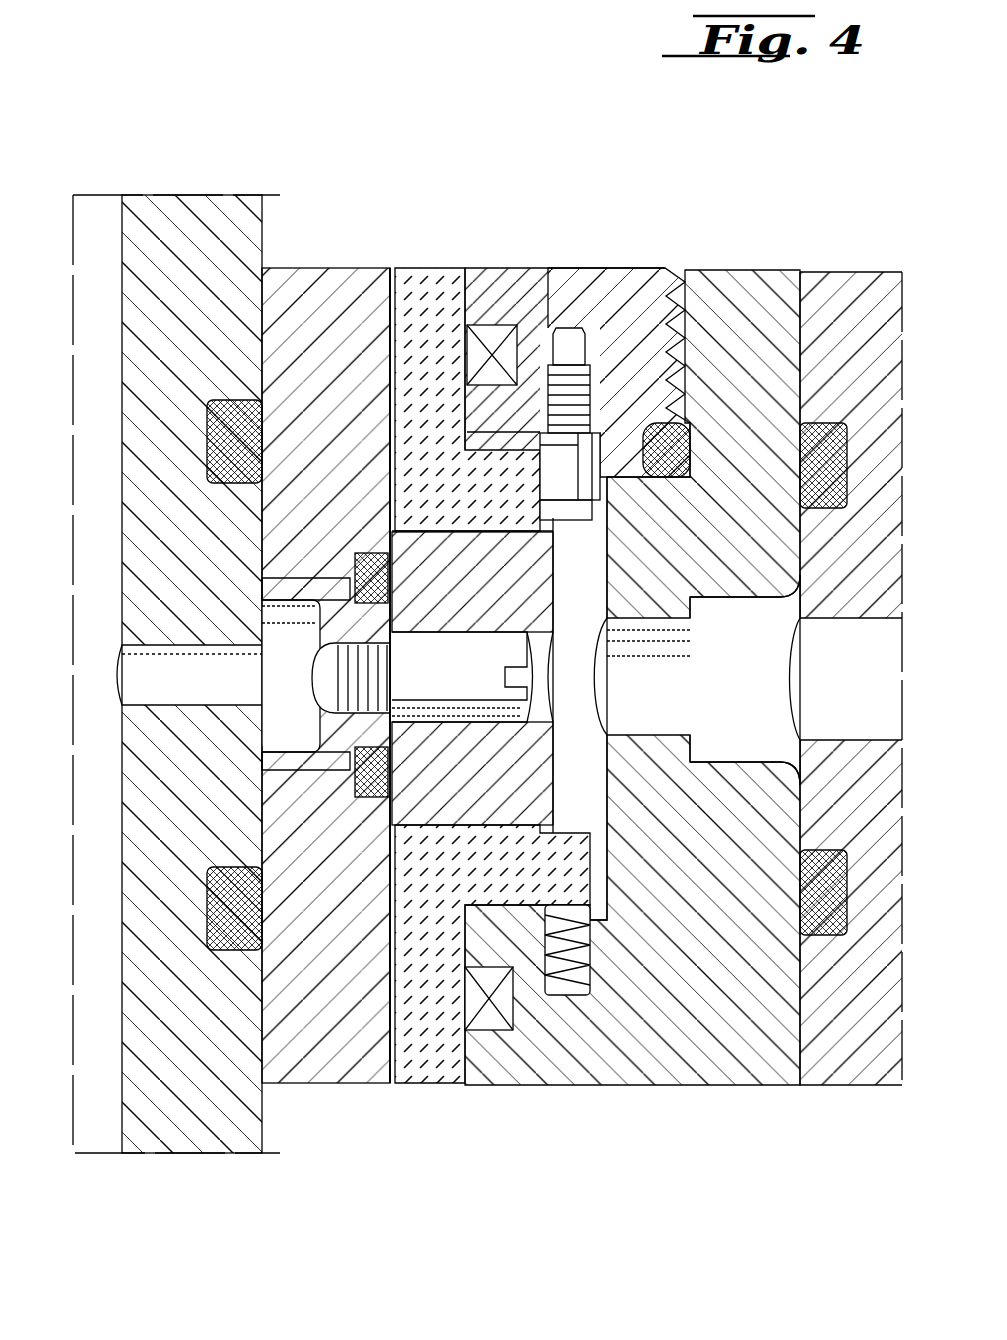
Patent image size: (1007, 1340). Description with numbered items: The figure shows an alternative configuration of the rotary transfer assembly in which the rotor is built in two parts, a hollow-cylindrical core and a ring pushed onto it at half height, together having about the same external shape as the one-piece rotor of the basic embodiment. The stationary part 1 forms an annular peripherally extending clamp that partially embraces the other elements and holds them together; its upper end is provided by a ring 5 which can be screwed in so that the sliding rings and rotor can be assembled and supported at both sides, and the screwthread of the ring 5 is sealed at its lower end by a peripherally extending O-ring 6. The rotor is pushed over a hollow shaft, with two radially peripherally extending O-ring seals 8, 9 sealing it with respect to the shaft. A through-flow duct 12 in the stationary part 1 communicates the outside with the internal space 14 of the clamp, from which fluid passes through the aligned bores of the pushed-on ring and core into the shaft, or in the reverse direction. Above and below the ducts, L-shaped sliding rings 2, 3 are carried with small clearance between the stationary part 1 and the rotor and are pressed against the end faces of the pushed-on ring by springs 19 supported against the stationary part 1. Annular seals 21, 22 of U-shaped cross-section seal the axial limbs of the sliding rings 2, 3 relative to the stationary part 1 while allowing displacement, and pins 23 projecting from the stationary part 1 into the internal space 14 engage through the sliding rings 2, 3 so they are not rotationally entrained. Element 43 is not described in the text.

The stationary part 1 is at (738, 1050).
The sliding ring 2 is at (438, 268).
The sliding ring 3 is at (425, 1085).
The ring 5 is at (612, 268).
The O-ring 6 is at (693, 445).
The O-ring seal 8 is at (207, 438).
The O-ring seal 9 is at (207, 905).
The through-flow duct 12 is at (643, 678).
The internal space 14 is at (590, 797).
The spring 19 is at (572, 1000).
The annular seal 21 is at (486, 268).
The annular seal 22 is at (490, 1030).
The pin 23 is at (603, 517).
The cover block 43 is at (218, 228).